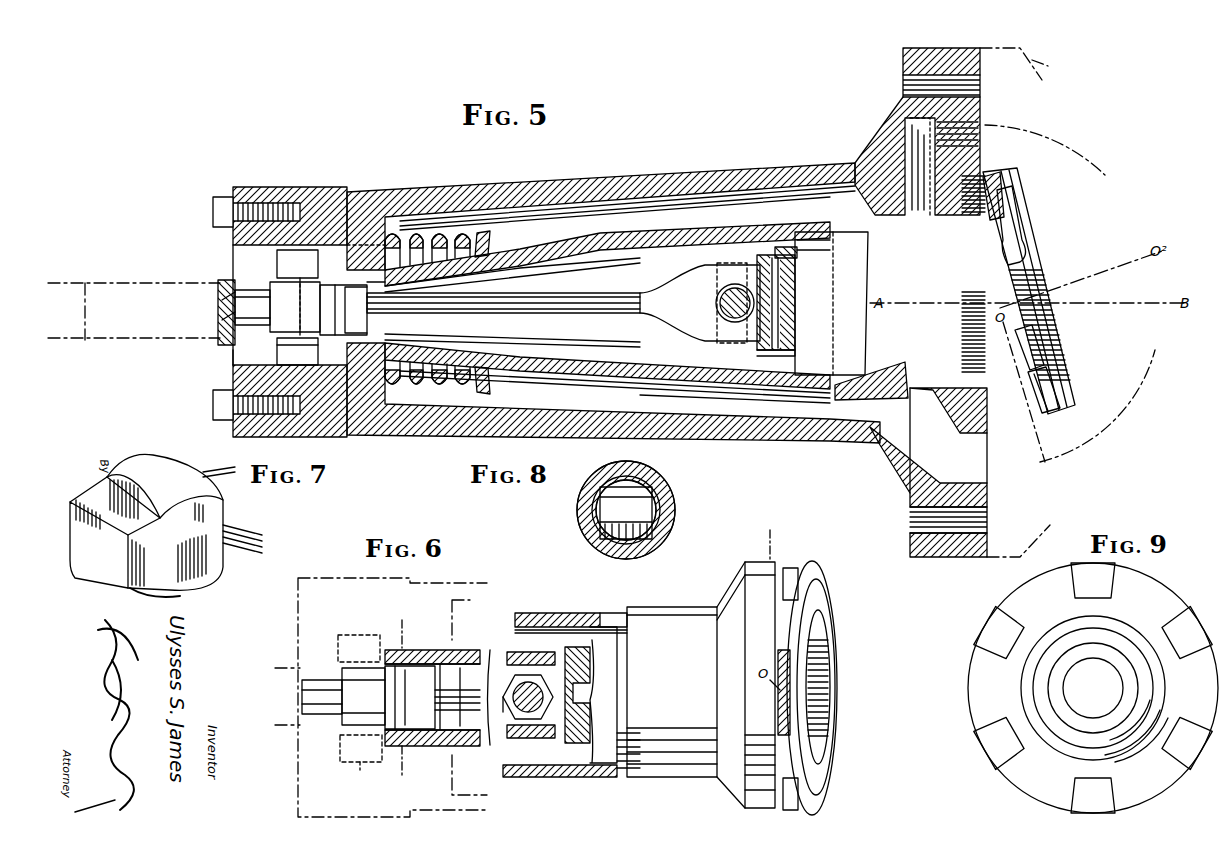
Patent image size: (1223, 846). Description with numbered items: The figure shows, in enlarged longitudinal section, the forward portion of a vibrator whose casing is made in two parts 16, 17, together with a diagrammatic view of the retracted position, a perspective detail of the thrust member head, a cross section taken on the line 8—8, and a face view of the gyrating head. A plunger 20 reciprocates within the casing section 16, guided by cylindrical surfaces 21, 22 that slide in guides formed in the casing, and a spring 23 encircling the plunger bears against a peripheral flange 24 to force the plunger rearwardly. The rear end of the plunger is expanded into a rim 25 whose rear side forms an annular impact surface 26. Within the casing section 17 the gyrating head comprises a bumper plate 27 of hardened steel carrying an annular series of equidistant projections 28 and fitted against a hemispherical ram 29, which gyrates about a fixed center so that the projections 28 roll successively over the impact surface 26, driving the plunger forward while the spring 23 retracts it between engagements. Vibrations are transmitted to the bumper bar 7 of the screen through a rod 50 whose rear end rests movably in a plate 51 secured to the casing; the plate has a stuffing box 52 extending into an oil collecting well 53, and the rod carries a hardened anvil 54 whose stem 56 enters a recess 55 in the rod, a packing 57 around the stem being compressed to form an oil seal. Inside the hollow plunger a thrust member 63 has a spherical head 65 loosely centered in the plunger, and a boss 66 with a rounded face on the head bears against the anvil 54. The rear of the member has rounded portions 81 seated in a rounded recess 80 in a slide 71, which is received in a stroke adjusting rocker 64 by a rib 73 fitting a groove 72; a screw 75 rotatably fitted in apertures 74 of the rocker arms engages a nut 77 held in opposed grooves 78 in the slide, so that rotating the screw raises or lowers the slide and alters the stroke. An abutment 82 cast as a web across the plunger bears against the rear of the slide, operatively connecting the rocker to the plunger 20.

In FIG. 5, the bumper bar 7 is at (72, 346).
In FIG. 6, the base plate 8 is at (404, 696).
In FIG. 5, the casing section 16 is at (735, 430).
In FIG. 6, the casing section 16 is at (478, 580).
In FIG. 5, the casing section 17 is at (1022, 64).
In FIG. 5, the plunger 20 is at (572, 375).
In FIG. 8, the plunger 20 is at (672, 530).
In FIG. 6, the plunger 20 is at (608, 778).
In FIG. 5, the cylindrical surface 21 is at (377, 358).
In FIG. 6, the cylindrical surface 21 is at (425, 650).
In FIG. 5, the cylindrical surface 22 is at (876, 382).
In FIG. 5, the spring 23 is at (446, 386).
In FIG. 5, the peripheral flange 24 is at (494, 386).
In FIG. 5, the rim 25 is at (978, 405).
In FIG. 6, the rim 25 is at (720, 780).
In FIG. 5, the impact surface 26 is at (903, 155).
In FIG. 6, the impact surface 26 is at (778, 565).
In FIG. 5, the bumper plate 27 is at (1045, 256).
In FIG. 6, the bumper plate 27 is at (832, 762).
In FIG. 9, the bumper plate 27 is at (968, 663).
In FIG. 5, the projections 28 is at (1015, 235).
In FIG. 6, the projections 28 is at (800, 572).
In FIG. 9, the projections 28 is at (1175, 628).
In FIG. 5, the ram 29 is at (1108, 428).
In FIG. 5, the rod 50 is at (235, 340).
In FIG. 5, the plate 51 is at (240, 196).
In FIG. 5, the stuffing box 52 is at (297, 355).
In FIG. 6, the stuffing box 52 is at (361, 748).
In FIG. 5, the oil collecting well 53 is at (340, 235).
In FIG. 6, the oil collecting well 53 is at (360, 774).
In FIG. 5, the anvil 54 is at (277, 307).
In FIG. 6, the anvil 54 is at (372, 668).
In FIG. 5, the recess 55 is at (222, 300).
In FIG. 5, the stem 56 is at (225, 326).
In FIG. 6, the stem 56 is at (306, 695).
In FIG. 5, the packing 57 is at (238, 362).
In FIG. 5, the thrust member 63 is at (538, 316).
In FIG. 7, the thrust member 63 is at (245, 545).
In FIG. 8, the thrust member 63 is at (648, 478).
In FIG. 6, the thrust member 63 is at (470, 700).
In FIG. 5, the stroke adjusting rocker 64 is at (793, 260).
In FIG. 6, the stroke adjusting rocker 64 is at (585, 650).
In FIG. 5, the spherical head 65 is at (415, 274).
In FIG. 7, the spherical head 65 is at (135, 590).
In FIG. 8, the spherical head 65 is at (666, 494).
In FIG. 6, the spherical head 65 is at (438, 650).
In FIG. 5, the boss 66 is at (330, 282).
In FIG. 7, the boss 66 is at (96, 552).
In FIG. 8, the boss 66 is at (603, 516).
In FIG. 6, the boss 66 is at (390, 746).
In FIG. 5, the slide 71 is at (760, 352).
In FIG. 5, the groove 72 is at (796, 296).
In FIG. 6, the groove 72 is at (592, 680).
In FIG. 5, the rib 73 is at (790, 318).
In FIG. 6, the rib 73 is at (545, 740).
In FIG. 5, the apertures 74 is at (718, 318).
In FIG. 5, the screw 75 is at (716, 303).
In FIG. 6, the screw 75 is at (512, 722).
In FIG. 6, the nut 77 is at (505, 710).
In FIG. 6, the grooves 78 is at (515, 655).
In FIG. 5, the rounded recess 80 is at (744, 380).
In FIG. 5, the rounded portions 81 is at (740, 348).
In FIG. 5, the abutment 82 is at (856, 266).
In FIG. 6, the abutment 82 is at (565, 770).